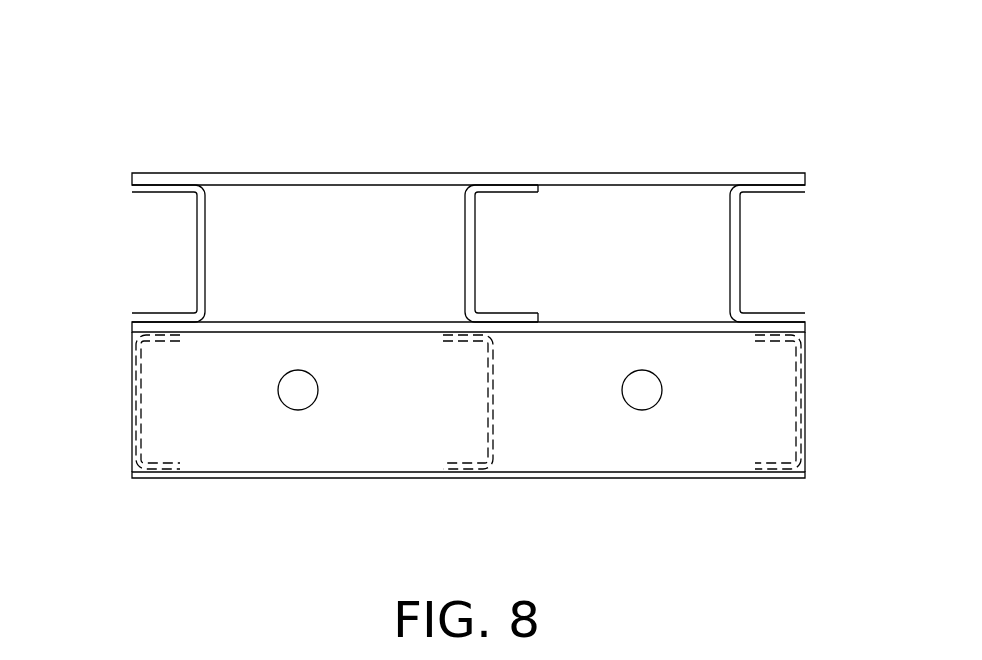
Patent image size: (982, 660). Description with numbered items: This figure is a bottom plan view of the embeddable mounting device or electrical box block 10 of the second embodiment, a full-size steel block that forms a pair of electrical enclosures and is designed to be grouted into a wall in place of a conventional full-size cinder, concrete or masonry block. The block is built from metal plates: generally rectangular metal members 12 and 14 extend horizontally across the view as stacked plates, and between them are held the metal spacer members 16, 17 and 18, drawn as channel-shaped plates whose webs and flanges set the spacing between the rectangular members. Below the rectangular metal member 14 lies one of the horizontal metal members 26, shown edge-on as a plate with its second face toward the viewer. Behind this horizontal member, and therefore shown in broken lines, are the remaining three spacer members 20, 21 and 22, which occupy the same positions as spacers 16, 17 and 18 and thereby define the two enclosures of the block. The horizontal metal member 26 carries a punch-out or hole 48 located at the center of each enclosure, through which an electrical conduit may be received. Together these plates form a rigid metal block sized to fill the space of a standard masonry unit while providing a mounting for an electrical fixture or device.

The mounting device or steel block 10 is at (190, 103).
The rectangular metal member 12 is at (346, 173).
The rectangular metal member 14 is at (347, 322).
The metal spacer member 16 is at (740, 249).
The metal spacer member 17 is at (475, 249).
The metal spacer member 18 is at (205, 249).
The metal spacer member 20 is at (805, 410).
The metal spacer member 21 is at (493, 428).
The metal spacer member 22 is at (132, 395).
The horizontal metal member 26 is at (252, 452).
The punch-out or hole 48 is at (314, 396).